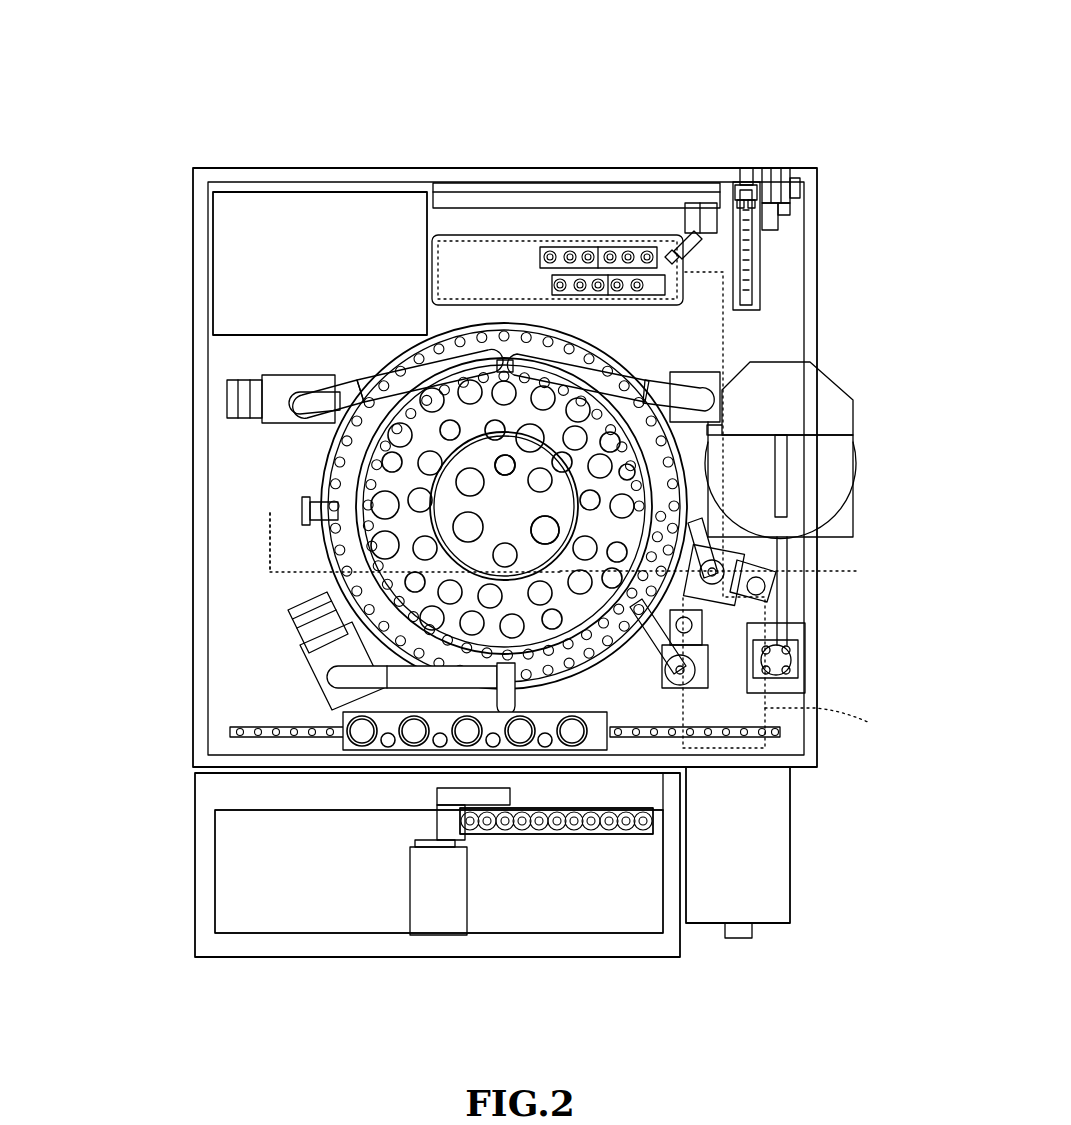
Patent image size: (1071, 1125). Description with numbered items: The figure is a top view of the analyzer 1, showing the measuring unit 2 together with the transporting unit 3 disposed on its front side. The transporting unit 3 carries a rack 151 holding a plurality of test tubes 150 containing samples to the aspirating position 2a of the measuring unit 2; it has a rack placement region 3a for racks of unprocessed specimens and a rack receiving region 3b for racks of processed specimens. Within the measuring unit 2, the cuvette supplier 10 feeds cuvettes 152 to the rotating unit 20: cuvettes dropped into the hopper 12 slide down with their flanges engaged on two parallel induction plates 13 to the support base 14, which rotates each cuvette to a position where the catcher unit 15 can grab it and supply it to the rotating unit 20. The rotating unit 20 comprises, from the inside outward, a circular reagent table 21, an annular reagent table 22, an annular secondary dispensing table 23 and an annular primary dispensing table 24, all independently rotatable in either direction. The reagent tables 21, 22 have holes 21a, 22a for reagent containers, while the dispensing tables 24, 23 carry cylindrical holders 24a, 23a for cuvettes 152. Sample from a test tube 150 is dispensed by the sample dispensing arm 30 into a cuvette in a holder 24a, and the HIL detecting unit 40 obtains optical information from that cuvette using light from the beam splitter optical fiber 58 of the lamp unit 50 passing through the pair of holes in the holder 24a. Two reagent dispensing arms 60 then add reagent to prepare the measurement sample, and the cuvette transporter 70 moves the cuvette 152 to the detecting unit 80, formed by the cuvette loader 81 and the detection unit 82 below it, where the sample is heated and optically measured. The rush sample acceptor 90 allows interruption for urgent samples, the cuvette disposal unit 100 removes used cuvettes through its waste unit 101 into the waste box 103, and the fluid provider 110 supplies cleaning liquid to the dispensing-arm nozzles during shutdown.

The analyzer 1 is at (634, 118).
The measuring unit 2 is at (781, 163).
The aspirating position 2a is at (428, 830).
The transporting unit 3 is at (432, 937).
The rack placement region 3a is at (562, 905).
The rack receiving region 3b is at (297, 880).
The cuvette supplier 10 is at (835, 423).
The hopper 12 is at (800, 443).
The induction plates 13 is at (785, 595).
The support base 14 is at (797, 657).
The catcher unit 15 is at (702, 680).
The rotating unit 20 is at (430, 572).
The circular reagent table 21 is at (468, 562).
The holes 21a is at (493, 474).
The annular reagent table 22 is at (380, 545).
The holes 22a is at (545, 528).
The secondary dispensing table 23 is at (325, 480).
The holders 23a is at (318, 468).
The primary dispensing table 24 is at (318, 443).
The holders 24a is at (305, 540).
The sample dispensing arm 30 is at (330, 672).
The HIL detecting unit 40 is at (298, 494).
The lamp unit 50 is at (792, 510).
The beam splitter optical fiber 58 is at (730, 571).
The reagent dispensing arms 60 is at (400, 380).
The cuvette transporter 70 is at (693, 178).
The detecting unit 80 is at (552, 246).
The cuvette loader 81 is at (477, 232).
The detection unit 82 is at (422, 256).
The rush sample acceptor 90 is at (332, 721).
The cuvette disposal unit 100 is at (765, 835).
The waste unit 101 is at (770, 530).
The waste box 103 is at (778, 893).
The fluid provider 110 is at (268, 215).
The test tubes 150 is at (500, 836).
The rack 151 is at (613, 836).
The cuvette 152 is at (622, 247).